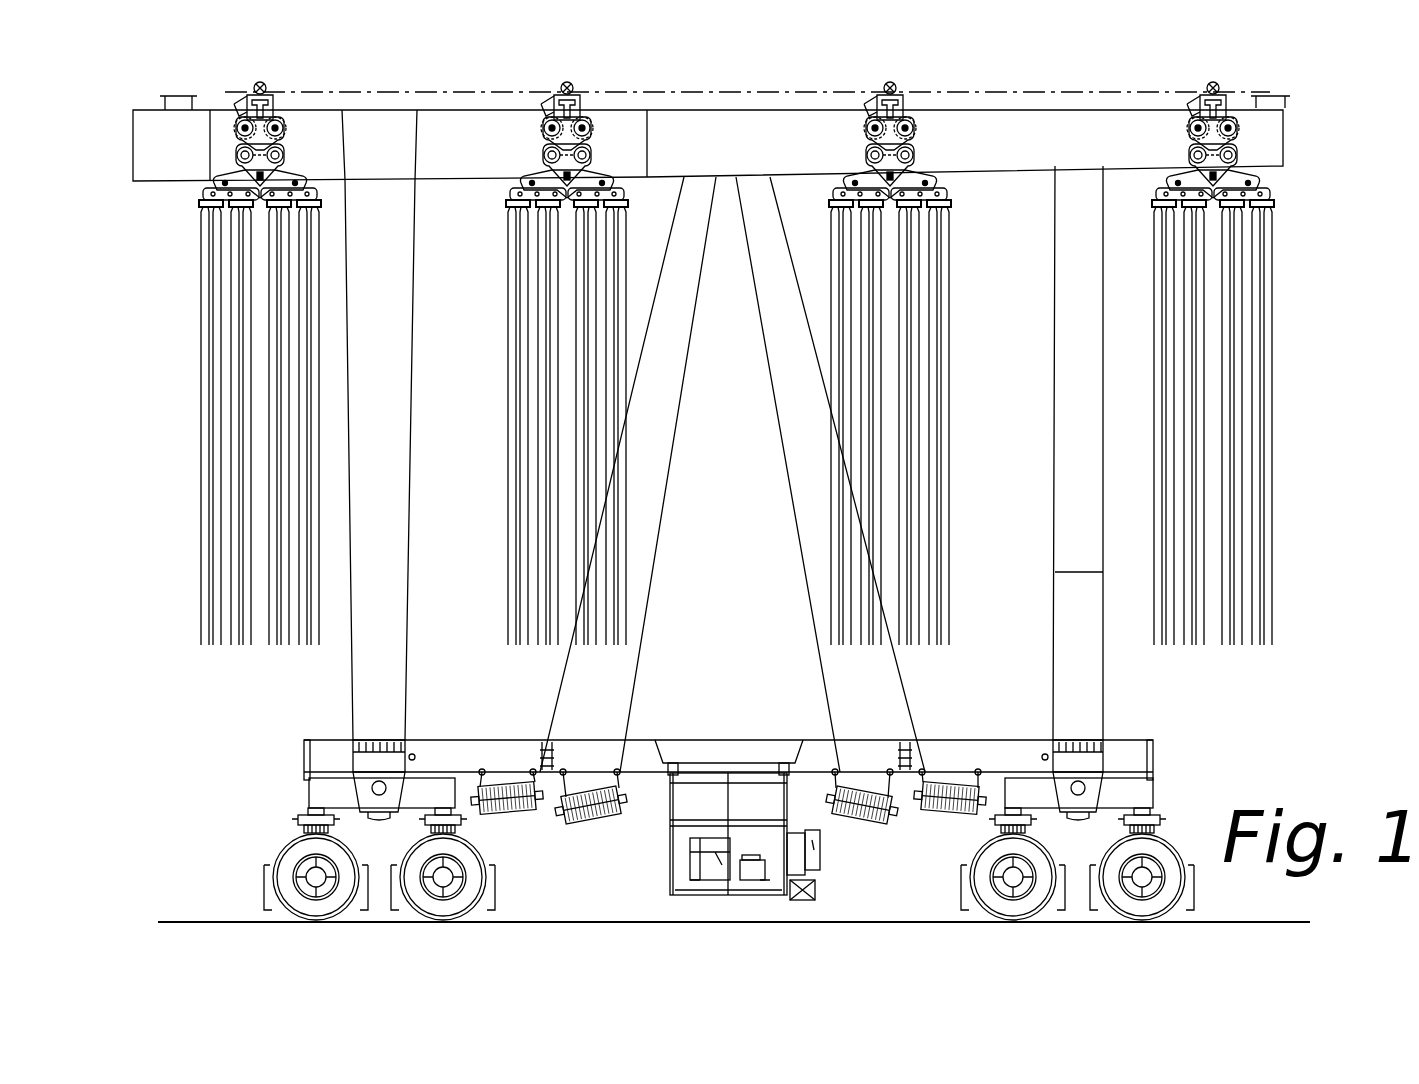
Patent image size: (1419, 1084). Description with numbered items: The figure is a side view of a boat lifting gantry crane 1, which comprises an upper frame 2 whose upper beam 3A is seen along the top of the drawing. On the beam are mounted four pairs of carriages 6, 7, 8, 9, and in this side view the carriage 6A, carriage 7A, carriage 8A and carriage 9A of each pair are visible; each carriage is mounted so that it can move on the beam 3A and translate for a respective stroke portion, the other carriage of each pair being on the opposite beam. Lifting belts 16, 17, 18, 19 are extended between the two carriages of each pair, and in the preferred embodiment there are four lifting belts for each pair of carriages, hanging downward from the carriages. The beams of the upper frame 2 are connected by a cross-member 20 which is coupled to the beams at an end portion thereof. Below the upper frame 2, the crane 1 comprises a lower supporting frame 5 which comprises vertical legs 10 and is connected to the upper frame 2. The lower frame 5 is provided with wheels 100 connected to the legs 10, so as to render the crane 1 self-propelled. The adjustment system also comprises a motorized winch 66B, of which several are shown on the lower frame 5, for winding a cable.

The boat lifting gantry crane 1 is at (1338, 270).
The upper frame 2 is at (1290, 140).
The upper beam 3A is at (725, 140).
The lower supporting frame 5 is at (1170, 776).
The pair of carriages 6 is at (302, 134).
The carriage 6A is at (233, 128).
The pair of carriages 7 is at (603, 134).
The carriage 7A is at (548, 128).
The pair of carriages 8 is at (928, 131).
The carriage 8A is at (862, 128).
The pair of carriages 9 is at (1248, 130).
The carriage 9A is at (1187, 128).
The vertical legs 10 is at (367, 683).
The lifting belt 16 is at (193, 567).
The lifting belt 17 is at (632, 434).
The lifting belt 18 is at (824, 491).
The lifting belt 19 is at (1278, 462).
The cross-member 20 is at (400, 156).
The motorized winch 66B is at (506, 778).
The wheels 100 is at (290, 858).